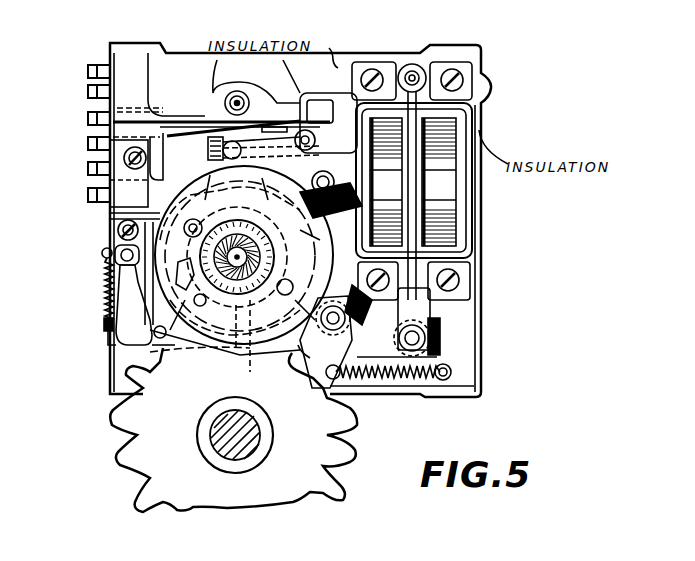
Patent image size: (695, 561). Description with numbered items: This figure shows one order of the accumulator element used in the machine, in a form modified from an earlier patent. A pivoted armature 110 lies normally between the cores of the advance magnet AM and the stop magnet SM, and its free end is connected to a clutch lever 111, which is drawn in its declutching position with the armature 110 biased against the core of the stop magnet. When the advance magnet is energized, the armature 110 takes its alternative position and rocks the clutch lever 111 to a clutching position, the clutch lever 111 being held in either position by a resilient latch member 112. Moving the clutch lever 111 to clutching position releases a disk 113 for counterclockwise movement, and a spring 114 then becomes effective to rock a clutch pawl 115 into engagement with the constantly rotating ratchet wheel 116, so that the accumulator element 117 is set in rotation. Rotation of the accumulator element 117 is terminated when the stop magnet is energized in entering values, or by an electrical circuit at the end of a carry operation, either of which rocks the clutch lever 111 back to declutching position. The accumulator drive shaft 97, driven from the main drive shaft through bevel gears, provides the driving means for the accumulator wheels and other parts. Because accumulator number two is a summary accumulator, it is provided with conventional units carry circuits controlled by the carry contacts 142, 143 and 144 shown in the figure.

The accumulator drive shaft 97 is at (212, 433).
The pivoted armature 110 is at (457, 237).
The clutch lever 111 is at (283, 345).
The resilient latch member 112 is at (106, 326).
The disk 113 is at (205, 345).
The spring 114 is at (244, 347).
The clutch pawl 115 is at (102, 285).
The ratchet wheel 116 is at (230, 222).
The accumulator element 117 is at (110, 224).
The carry contacts 142 is at (208, 158).
The carry contacts 143 is at (135, 179).
The carry contacts 144 is at (160, 123).